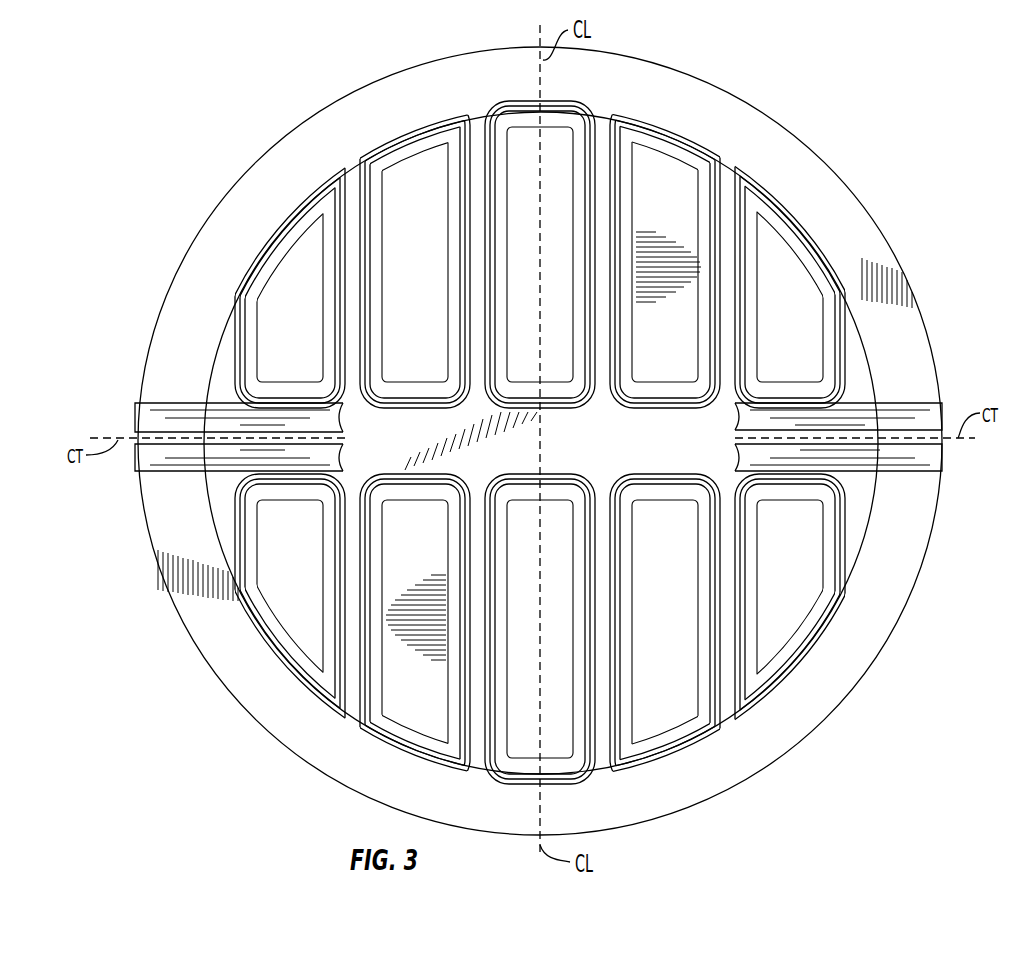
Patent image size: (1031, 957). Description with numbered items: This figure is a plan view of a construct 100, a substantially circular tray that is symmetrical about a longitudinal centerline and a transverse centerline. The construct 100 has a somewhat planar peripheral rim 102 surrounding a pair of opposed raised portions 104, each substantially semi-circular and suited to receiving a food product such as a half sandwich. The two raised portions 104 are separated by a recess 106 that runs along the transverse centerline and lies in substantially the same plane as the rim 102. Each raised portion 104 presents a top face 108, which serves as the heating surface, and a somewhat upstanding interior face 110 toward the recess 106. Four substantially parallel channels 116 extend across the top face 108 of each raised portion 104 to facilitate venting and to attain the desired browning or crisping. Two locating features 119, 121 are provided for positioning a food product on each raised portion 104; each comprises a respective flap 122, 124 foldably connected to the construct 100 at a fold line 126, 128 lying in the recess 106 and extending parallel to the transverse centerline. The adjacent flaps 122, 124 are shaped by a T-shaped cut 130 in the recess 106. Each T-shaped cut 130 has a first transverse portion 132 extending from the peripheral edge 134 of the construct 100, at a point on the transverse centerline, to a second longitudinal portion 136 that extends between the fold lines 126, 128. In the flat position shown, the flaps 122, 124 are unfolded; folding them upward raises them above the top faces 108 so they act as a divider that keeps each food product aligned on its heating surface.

The construct 100 is at (742, 130).
The peripheral rim 102 is at (636, 78).
The raised portion 104 is at (357, 163).
The recess 106 is at (624, 449).
The top face 108 is at (429, 252).
The interior face 110 is at (590, 400).
The channel 116 is at (602, 158).
The locating feature 119 is at (190, 403).
The locating feature 121 is at (907, 400).
The flap 122 is at (216, 420).
The flap 124 is at (750, 415).
The fold line 126 is at (288, 405).
The fold line 128 is at (806, 404).
The T-shaped cut 130 is at (190, 450).
The first transverse portion 132 is at (148, 449).
The peripheral edge 134 is at (148, 535).
The second longitudinal portion 136 is at (350, 418).